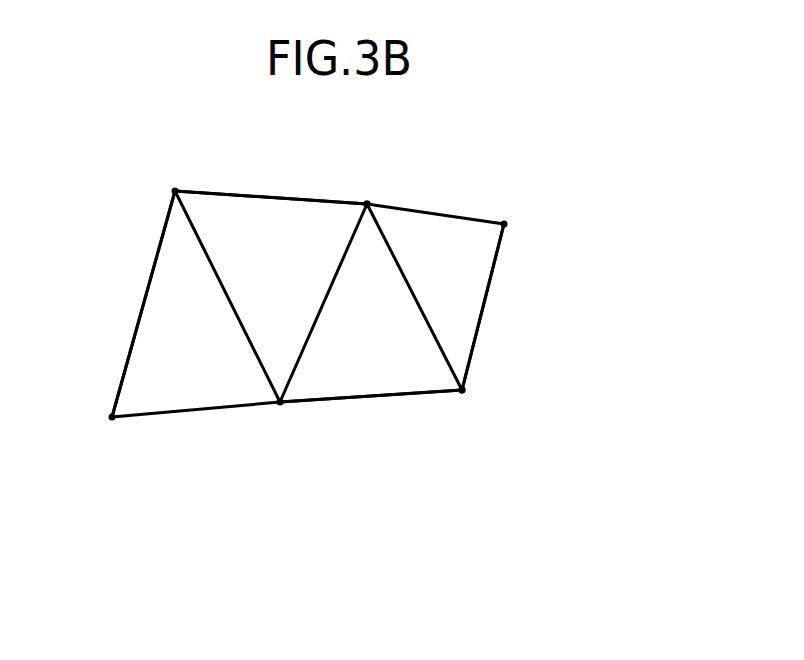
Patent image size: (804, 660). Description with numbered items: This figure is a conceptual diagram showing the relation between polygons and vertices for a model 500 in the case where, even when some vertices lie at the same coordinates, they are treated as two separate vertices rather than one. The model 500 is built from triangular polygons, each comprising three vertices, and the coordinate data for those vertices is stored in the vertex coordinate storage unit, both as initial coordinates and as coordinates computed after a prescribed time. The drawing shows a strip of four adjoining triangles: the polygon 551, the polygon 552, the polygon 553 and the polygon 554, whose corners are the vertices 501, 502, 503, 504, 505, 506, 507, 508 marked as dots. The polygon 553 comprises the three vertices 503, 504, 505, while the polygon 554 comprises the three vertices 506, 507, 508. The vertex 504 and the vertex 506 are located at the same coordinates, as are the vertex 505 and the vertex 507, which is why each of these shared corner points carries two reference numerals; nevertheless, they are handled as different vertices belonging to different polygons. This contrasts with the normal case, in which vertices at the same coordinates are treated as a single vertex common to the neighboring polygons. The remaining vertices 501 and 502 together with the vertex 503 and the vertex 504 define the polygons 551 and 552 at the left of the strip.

The model 500 is at (181, 498).
The vertex 501 is at (112, 419).
The vertex 502 is at (176, 190).
The vertex 503 is at (280, 404).
The vertex 504 is at (368, 203).
The vertex 505 is at (462, 392).
The vertex 506 is at (367, 204).
The vertex 507 is at (462, 390).
The vertex 508 is at (505, 223).
The polygon 551 is at (165, 278).
The polygon 552 is at (260, 213).
The polygon 553 is at (373, 383).
The polygon 554 is at (470, 285).